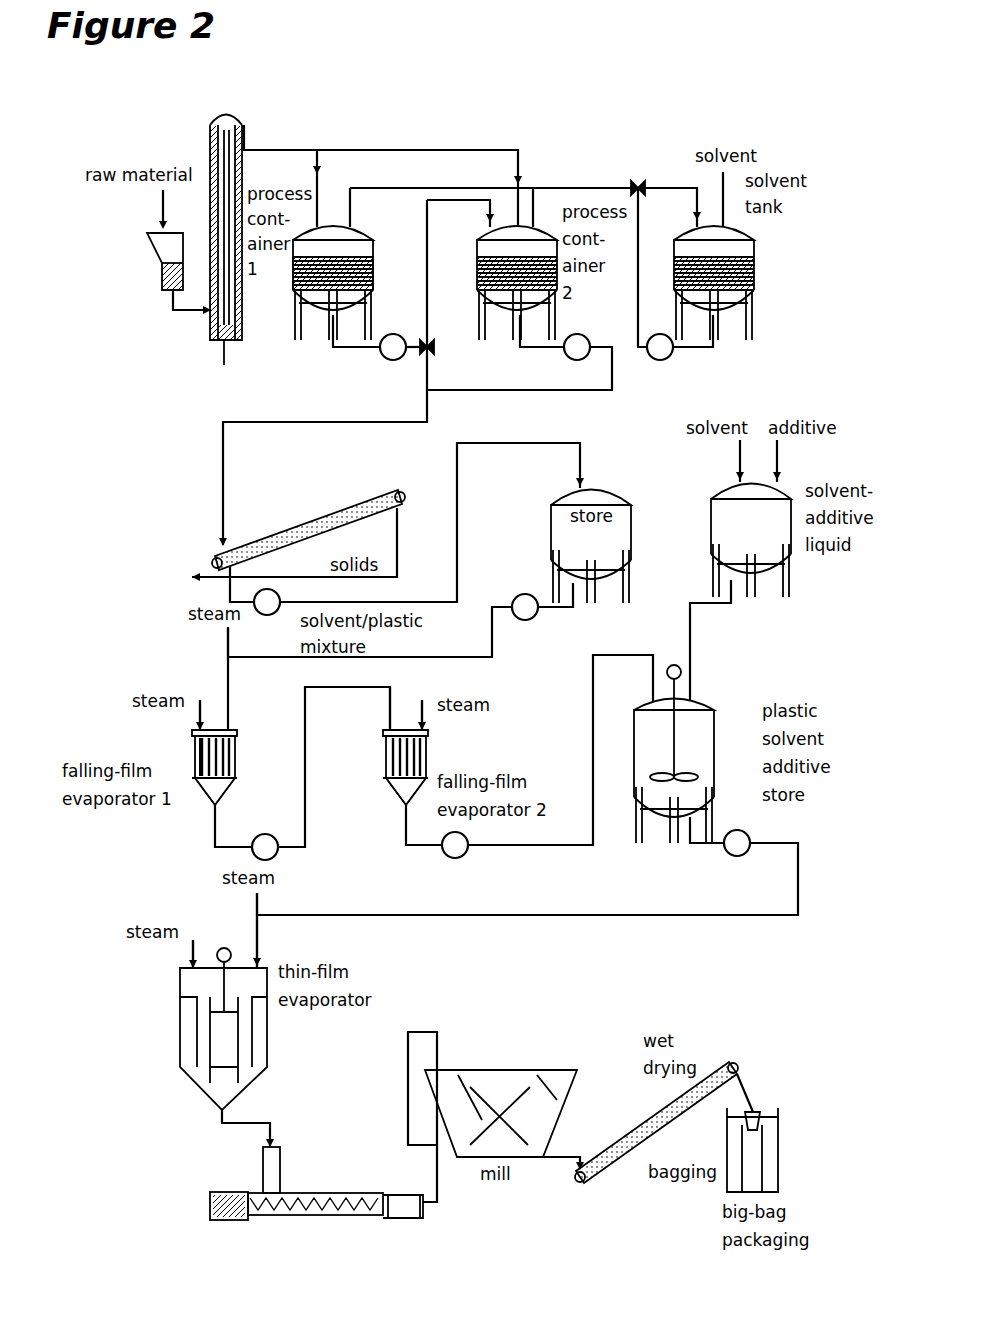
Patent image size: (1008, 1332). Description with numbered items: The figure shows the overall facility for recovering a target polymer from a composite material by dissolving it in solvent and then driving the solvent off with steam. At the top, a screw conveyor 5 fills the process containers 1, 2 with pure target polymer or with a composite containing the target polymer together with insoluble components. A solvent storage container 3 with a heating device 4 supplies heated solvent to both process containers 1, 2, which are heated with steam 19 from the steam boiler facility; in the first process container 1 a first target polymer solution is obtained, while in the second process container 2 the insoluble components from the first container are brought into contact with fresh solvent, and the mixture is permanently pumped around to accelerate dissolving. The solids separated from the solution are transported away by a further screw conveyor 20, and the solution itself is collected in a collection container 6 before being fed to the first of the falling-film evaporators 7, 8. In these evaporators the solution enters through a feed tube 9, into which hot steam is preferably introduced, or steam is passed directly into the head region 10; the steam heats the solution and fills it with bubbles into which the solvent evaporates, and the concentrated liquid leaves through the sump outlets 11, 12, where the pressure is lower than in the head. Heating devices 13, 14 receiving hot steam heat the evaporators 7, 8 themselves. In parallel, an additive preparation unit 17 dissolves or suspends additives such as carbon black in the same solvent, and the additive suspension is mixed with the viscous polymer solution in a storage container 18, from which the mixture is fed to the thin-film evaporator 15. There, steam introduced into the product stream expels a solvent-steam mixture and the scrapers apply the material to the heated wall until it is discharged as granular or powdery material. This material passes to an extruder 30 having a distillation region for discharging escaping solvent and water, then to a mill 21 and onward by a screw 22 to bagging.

The process container 1 is at (318, 330).
The process container 2 is at (498, 328).
The solvent storage container 3 is at (735, 330).
The heating device 4 is at (755, 258).
The screw conveyor 5 is at (226, 245).
The collection container 6 is at (573, 548).
The falling-film evaporator 7 is at (237, 757).
The falling-film evaporator 8 is at (431, 757).
The feed tube 9 is at (308, 796).
The head region 10 is at (307, 822).
The sump outlet 11 is at (218, 786).
The sump outlet 12 is at (401, 782).
The heating device 13 is at (197, 763).
The heating device 14 is at (392, 760).
The thin-film evaporator 15 is at (258, 1036).
The additive preparation unit 17 is at (735, 546).
The storage container 18 is at (698, 757).
The steam 19 is at (373, 273).
The screw conveyor for transporting away 20 is at (382, 514).
The mill 21 is at (487, 1072).
The screw 22 is at (706, 1110).
The extruder 30 is at (323, 1196).